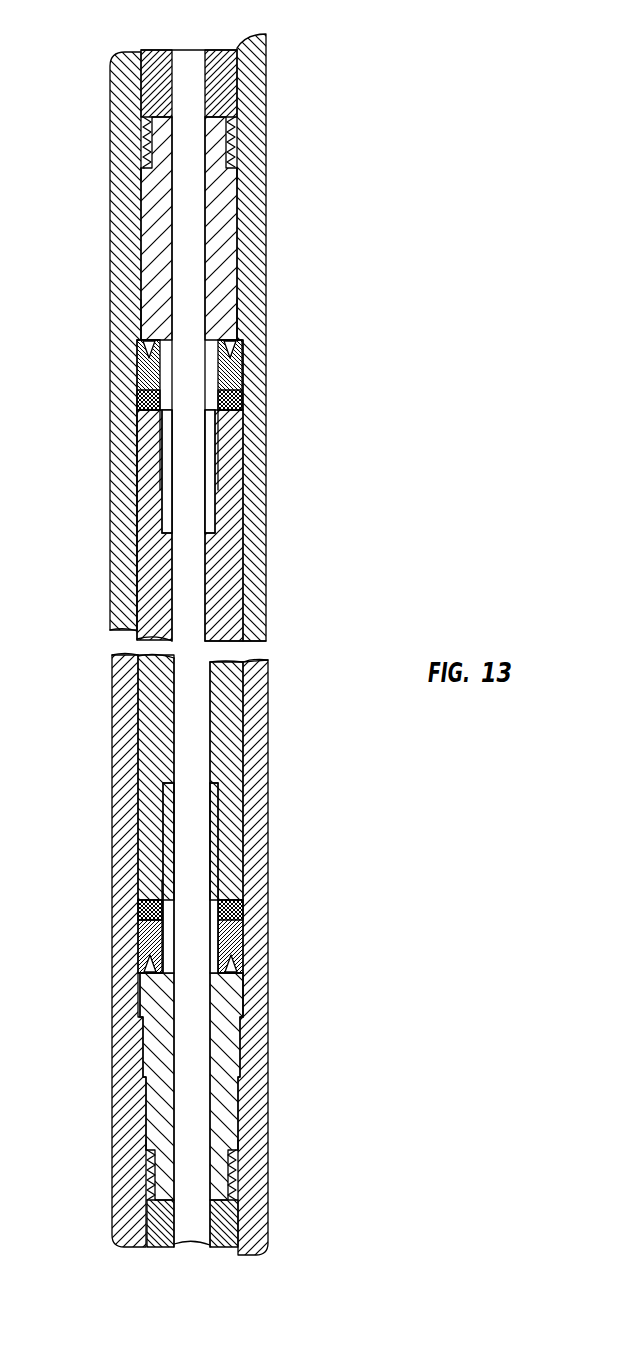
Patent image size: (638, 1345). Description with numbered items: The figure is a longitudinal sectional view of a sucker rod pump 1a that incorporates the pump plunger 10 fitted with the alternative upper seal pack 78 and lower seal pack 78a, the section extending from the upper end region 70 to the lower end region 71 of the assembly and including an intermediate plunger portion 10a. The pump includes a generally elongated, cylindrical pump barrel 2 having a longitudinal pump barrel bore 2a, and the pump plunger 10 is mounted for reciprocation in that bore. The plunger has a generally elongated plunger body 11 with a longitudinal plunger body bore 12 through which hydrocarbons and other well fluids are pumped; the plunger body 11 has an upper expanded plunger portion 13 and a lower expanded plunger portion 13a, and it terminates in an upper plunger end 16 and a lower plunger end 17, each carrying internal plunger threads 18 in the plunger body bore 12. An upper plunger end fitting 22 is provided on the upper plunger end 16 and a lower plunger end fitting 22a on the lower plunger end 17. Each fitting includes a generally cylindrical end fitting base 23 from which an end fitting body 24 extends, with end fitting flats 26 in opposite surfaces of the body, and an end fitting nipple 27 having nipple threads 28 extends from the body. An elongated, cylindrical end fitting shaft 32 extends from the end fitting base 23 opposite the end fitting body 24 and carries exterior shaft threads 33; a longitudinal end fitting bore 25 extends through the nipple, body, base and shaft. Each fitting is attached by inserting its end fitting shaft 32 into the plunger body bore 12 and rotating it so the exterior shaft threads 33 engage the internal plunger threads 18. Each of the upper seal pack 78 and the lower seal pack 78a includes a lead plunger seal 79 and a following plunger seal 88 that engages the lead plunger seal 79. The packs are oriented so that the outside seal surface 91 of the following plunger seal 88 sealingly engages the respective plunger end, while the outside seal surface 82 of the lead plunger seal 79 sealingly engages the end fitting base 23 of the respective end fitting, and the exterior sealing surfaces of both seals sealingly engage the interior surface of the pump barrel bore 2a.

The sucker rod pump 1a is at (72, 64).
The upper end 70 is at (157, 50).
The lower end 71 is at (160, 1247).
The pump barrel 2 is at (110, 268).
The pump barrel bore 2a is at (138, 1099).
The upper plunger end fitting 22 is at (237, 212).
The lower plunger end fitting 22a is at (240, 1107).
The end fitting flats 26 is at (113, 175).
The end fitting nipple 27 is at (214, 130).
The nipple threads 28 is at (140, 143).
The end fitting body 24 is at (225, 272).
The end fitting base 23 is at (245, 312).
The end fitting bore 25 is at (178, 308).
The outside seal surface 82 is at (245, 323).
The upper seal pack 78 is at (134, 386).
The lower seal pack 78a is at (128, 949).
The lead plunger seal 79 is at (238, 356).
The following plunger seal 88 is at (244, 389).
The upper plunger end 16 is at (245, 400).
The lower plunger end 17 is at (140, 928).
The outside seal surface 91 is at (135, 404).
The end fitting shaft 32 is at (232, 420).
The pump plunger 10 is at (123, 441).
The inner body lower section 10a is at (190, 777).
The plunger body 11 is at (133, 457).
The internal plunger threads 18 is at (162, 470).
The upper expanded plunger portion 13 is at (152, 546).
The lower expanded plunger portion 13a is at (165, 783).
The plunger body bore 12 is at (190, 590).
The exterior shaft threads 33 is at (222, 503).